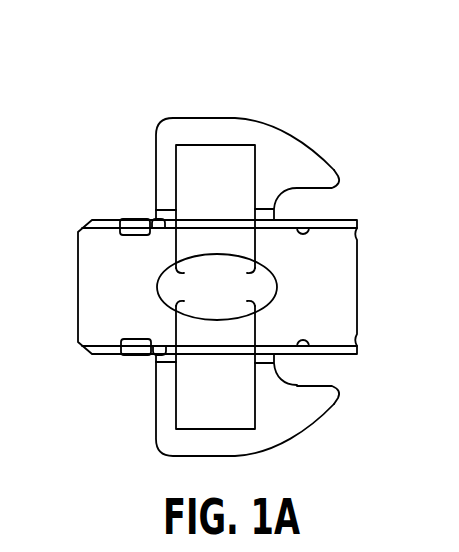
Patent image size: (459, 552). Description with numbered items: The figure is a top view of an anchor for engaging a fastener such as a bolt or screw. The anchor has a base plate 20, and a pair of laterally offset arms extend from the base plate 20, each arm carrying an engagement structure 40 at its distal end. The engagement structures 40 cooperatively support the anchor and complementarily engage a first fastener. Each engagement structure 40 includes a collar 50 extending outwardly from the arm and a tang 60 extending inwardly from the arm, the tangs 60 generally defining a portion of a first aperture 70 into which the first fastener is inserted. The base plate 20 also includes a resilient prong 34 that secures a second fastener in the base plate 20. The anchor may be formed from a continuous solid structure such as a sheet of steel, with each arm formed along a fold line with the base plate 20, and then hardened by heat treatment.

The base plate 20 is at (97, 293).
The resilient prong 34 is at (132, 220).
The engagement structure 40 is at (307, 150).
The collar 50 is at (340, 182).
The tang 60 is at (230, 243).
The first aperture 70 is at (208, 290).